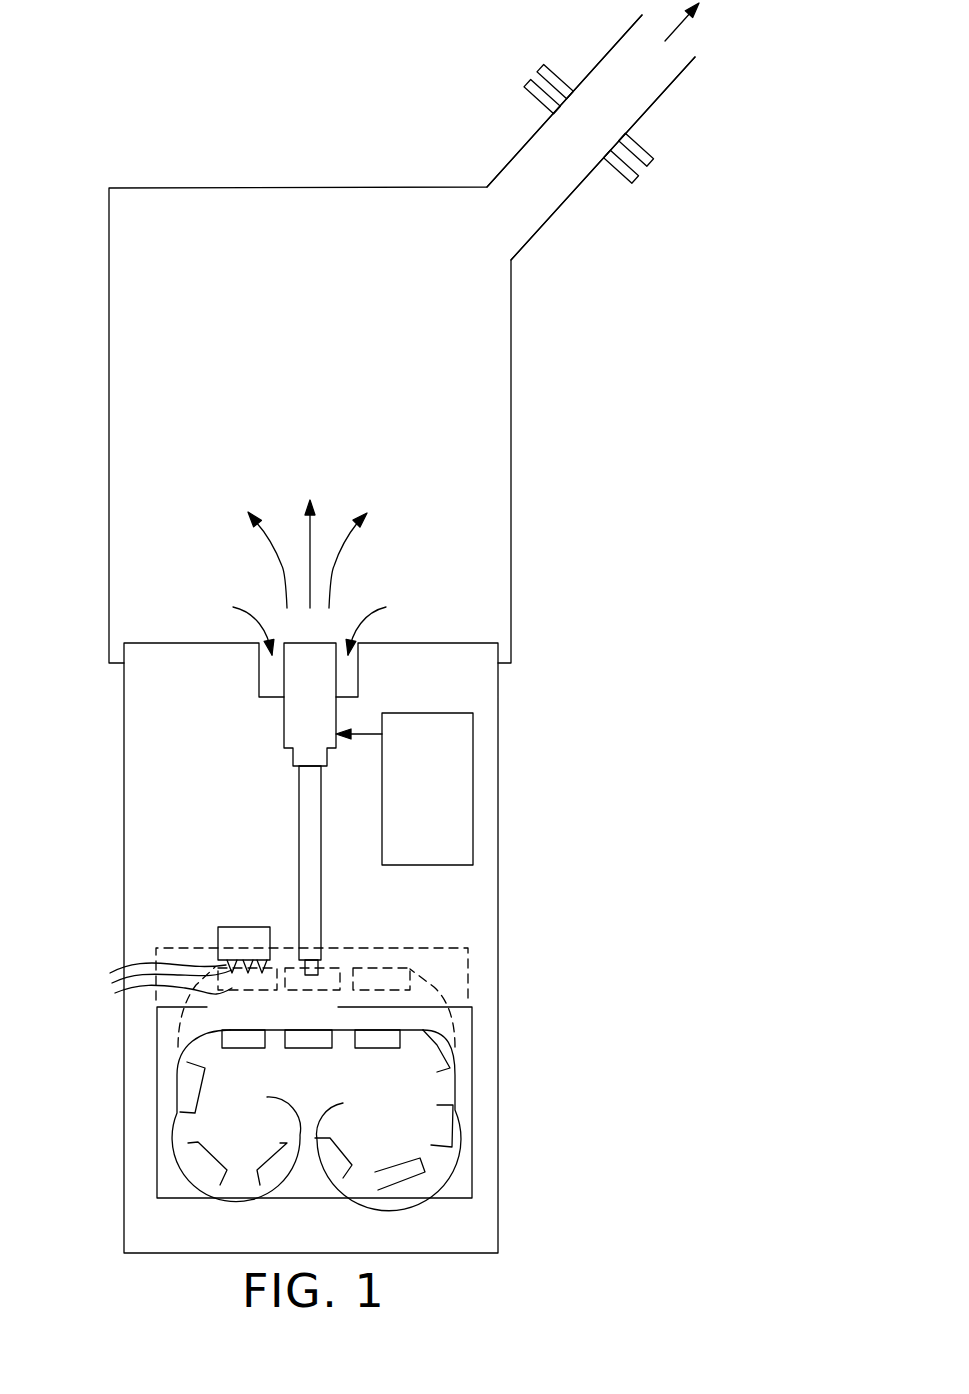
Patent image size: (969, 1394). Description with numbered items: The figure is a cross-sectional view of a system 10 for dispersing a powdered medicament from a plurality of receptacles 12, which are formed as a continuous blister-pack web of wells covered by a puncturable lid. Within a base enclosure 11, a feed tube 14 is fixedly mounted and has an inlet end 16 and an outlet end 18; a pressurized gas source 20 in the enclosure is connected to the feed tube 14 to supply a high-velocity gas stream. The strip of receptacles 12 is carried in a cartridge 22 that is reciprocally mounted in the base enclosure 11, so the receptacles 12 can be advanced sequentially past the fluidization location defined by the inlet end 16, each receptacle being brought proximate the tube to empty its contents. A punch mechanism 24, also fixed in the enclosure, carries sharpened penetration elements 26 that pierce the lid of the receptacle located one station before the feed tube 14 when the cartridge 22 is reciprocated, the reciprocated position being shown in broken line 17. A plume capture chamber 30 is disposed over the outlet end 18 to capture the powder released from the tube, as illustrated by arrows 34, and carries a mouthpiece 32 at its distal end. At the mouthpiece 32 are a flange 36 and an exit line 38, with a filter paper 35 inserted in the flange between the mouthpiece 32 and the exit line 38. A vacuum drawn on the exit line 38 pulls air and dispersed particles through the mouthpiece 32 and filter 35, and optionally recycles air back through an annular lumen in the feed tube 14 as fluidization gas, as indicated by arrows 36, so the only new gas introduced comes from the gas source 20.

The system 10 is at (600, 440).
The base enclosure 11 is at (124, 866).
The receptacles 12 is at (440, 1062).
The feed tube 14 is at (299, 820).
The inlet end 16 is at (337, 930).
The broken line 17 is at (440, 986).
The outlet end 18 is at (270, 762).
The pressurized gas source 20 is at (450, 770).
The cartridge 22 is at (473, 1080).
The punch mechanism 24 is at (240, 942).
The sharpened penetration elements 26 is at (152, 983).
The plume capture chamber 30 is at (125, 472).
The mouthpiece 32 is at (577, 188).
The arrows 34 is at (330, 588).
The filter paper 35 is at (588, 120).
The flange 36 is at (642, 155).
The exit line 38 is at (687, 67).